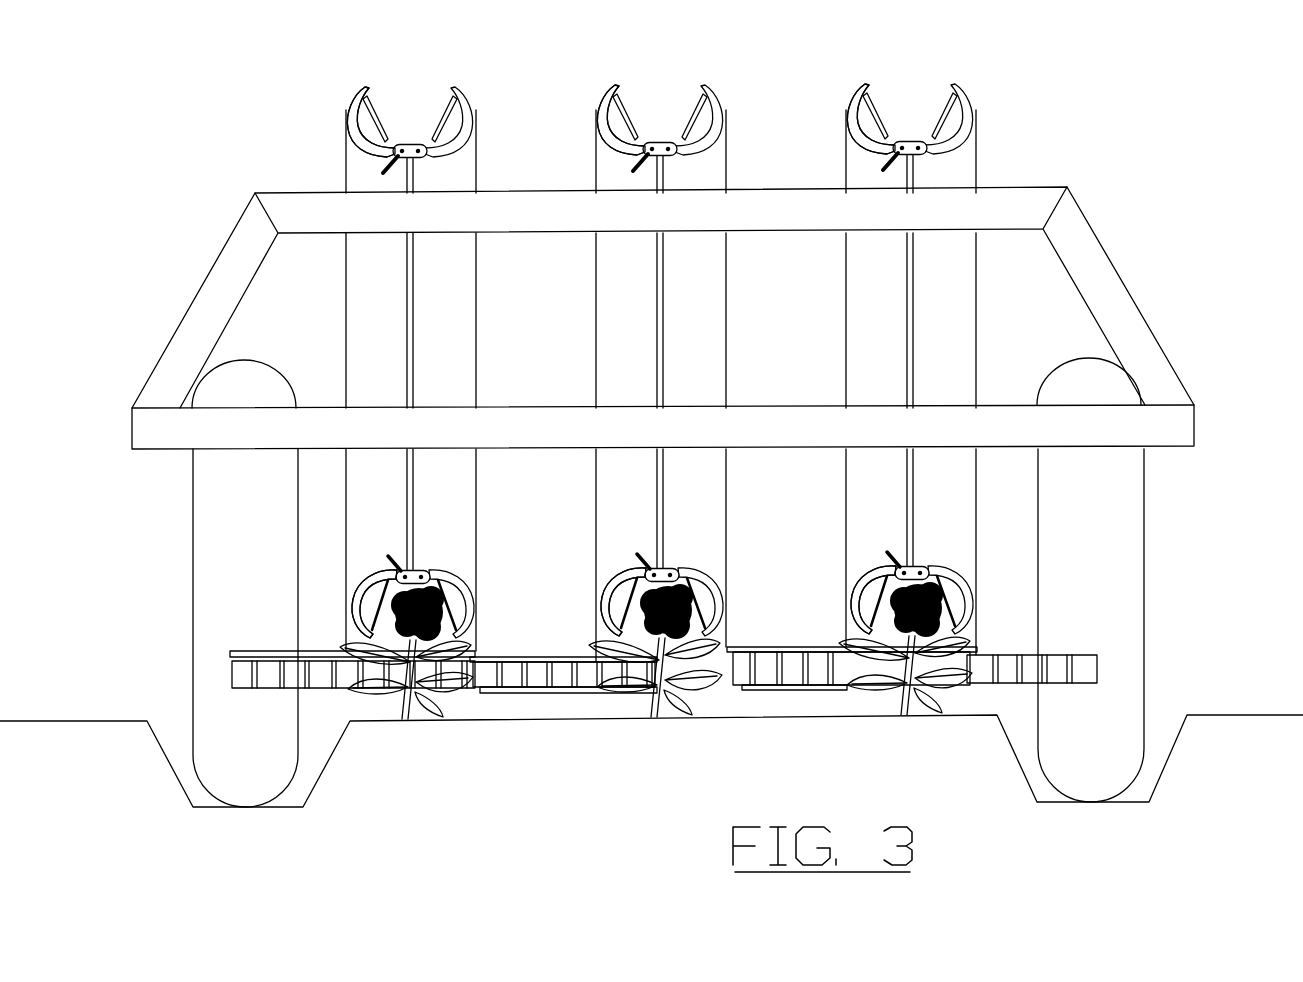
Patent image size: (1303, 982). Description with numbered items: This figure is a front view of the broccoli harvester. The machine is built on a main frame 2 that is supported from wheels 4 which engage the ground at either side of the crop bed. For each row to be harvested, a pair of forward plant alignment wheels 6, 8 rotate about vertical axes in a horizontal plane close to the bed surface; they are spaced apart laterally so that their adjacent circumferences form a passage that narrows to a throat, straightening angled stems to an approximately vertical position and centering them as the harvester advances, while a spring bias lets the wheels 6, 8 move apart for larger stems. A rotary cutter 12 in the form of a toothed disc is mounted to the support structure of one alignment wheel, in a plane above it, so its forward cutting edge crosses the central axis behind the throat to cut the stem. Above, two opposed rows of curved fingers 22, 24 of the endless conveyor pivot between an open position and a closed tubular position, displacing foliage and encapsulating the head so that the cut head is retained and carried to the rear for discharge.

The main frame 2 is at (1112, 292).
The wheels 4 is at (213, 563).
The forward plant alignment wheel 6 is at (315, 677).
The forward plant alignment wheel 8 is at (510, 677).
The rotary cutter 12 is at (253, 649).
The curved fingers 22 is at (965, 98).
The curved fingers 24 is at (848, 98).